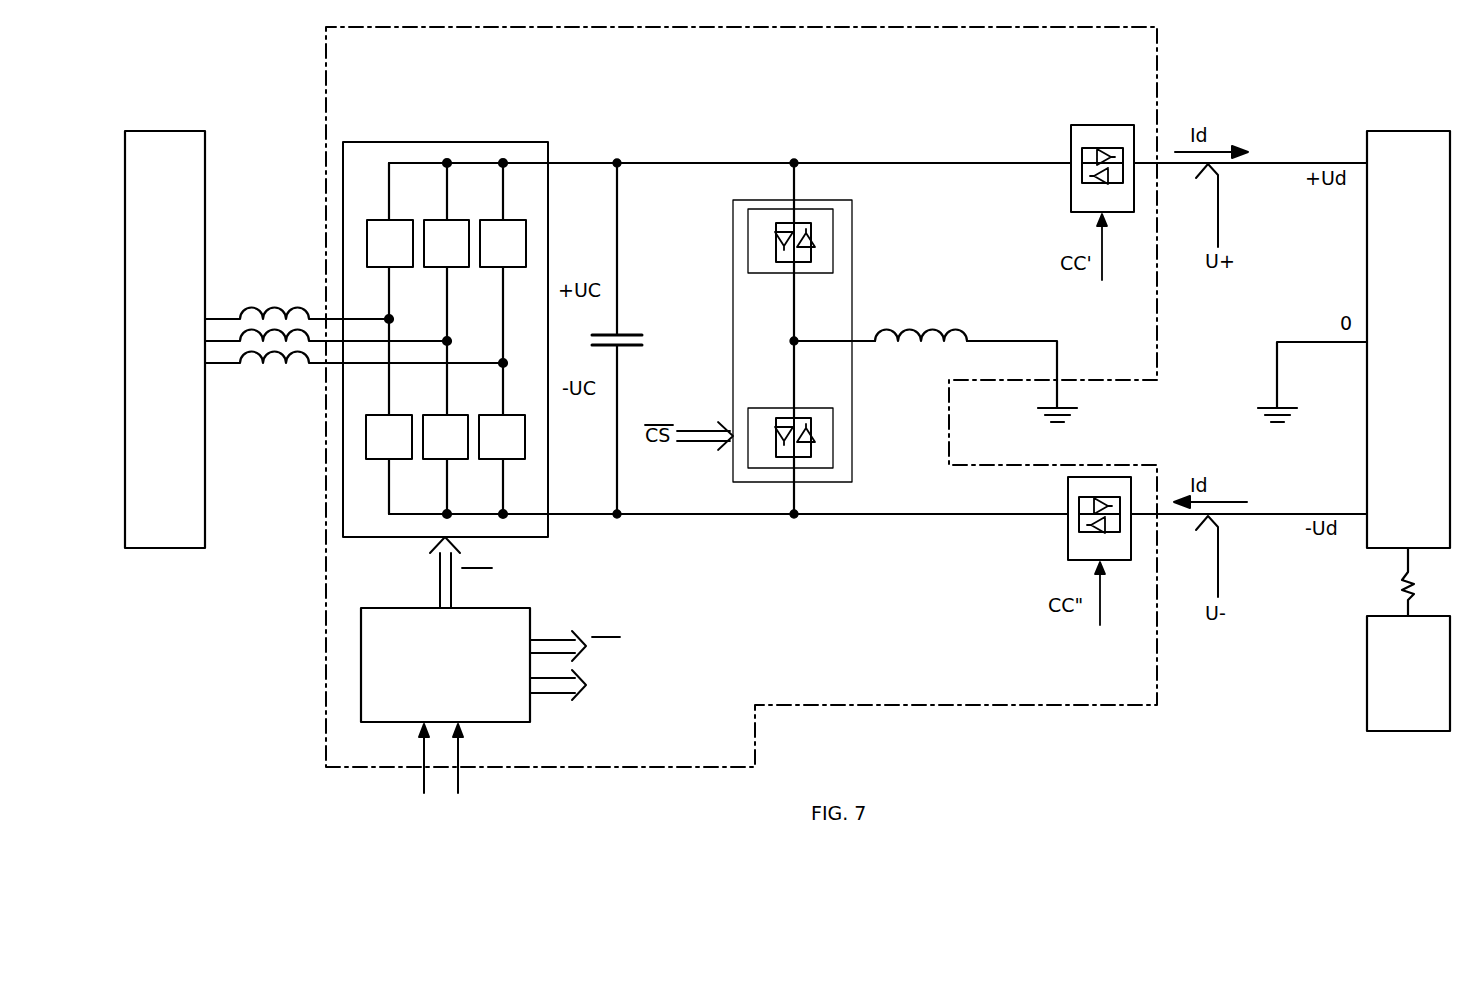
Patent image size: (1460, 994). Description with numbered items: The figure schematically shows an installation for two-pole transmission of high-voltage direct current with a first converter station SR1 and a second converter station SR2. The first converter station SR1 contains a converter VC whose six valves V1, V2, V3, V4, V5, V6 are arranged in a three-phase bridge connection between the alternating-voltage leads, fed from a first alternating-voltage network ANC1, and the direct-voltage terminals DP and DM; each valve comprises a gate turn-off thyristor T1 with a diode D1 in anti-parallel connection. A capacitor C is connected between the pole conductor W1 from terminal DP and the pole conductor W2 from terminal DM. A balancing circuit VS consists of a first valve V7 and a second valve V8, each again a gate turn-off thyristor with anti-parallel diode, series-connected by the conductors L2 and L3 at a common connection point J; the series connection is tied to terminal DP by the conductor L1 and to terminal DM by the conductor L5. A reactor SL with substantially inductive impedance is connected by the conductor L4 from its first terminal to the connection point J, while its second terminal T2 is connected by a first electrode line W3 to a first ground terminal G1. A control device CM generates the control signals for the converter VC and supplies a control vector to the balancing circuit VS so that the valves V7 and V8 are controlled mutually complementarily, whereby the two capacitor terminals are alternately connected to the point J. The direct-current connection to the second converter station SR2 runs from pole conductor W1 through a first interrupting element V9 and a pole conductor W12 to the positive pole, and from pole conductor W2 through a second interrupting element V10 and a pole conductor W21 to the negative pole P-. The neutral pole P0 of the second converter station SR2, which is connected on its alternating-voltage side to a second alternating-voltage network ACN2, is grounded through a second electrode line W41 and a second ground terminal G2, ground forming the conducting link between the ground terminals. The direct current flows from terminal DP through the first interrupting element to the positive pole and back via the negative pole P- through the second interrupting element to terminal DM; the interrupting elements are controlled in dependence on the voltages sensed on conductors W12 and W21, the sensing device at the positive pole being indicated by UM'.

The first alternating-voltage network ANC1 is at (185, 130).
The converter VC is at (445, 295).
The valve V1 is at (390, 243).
The valve V2 is at (502, 437).
The valve V3 is at (446, 243).
The valve V4 is at (389, 437).
The valve V5 is at (503, 243).
The valve V6 is at (445, 437).
The direct-voltage terminal DP is at (552, 162).
The direct-voltage terminal DM is at (550, 518).
The electric pole conductor W1 is at (598, 162).
The electric pole conductor W2 is at (592, 516).
The capacitor C is at (632, 337).
The balancing circuit VS is at (812, 338).
The first valve V7 is at (765, 210).
The second valve V8 is at (762, 470).
The gate turn-off thyristor T1 is at (760, 262).
The diode D1 is at (822, 262).
The electric conductor L1 is at (800, 172).
The electric conductor L2 is at (793, 302).
The electric conductor L3 is at (793, 388).
The electric conductor L4 is at (827, 341).
The electric conductor L5 is at (790, 516).
The connection point J is at (800, 345).
The reactor SL is at (910, 326).
The second terminal T2 is at (966, 341).
The first electrode line W3 is at (1030, 341).
The first ground terminal G1 is at (1040, 426).
The second ground terminal G2 is at (1268, 426).
The first interrupting element V9 is at (1100, 125).
The second interrupting element V10 is at (1118, 477).
The first converter station SR1 is at (1160, 82).
The second converter station SR2 is at (1415, 130).
The electric pole conductor W12 is at (1272, 162).
The electric pole conductor W21 is at (1278, 513).
The second electrode line W41 is at (1277, 368).
The negative pole P- is at (1367, 513).
The neutral pole P0 is at (1365, 344).
The positive pole voltage measuring device UM' is at (1236, 205).
The control device CM is at (361, 683).
The second three-phase alternating-voltage network ACN2 is at (1400, 733).